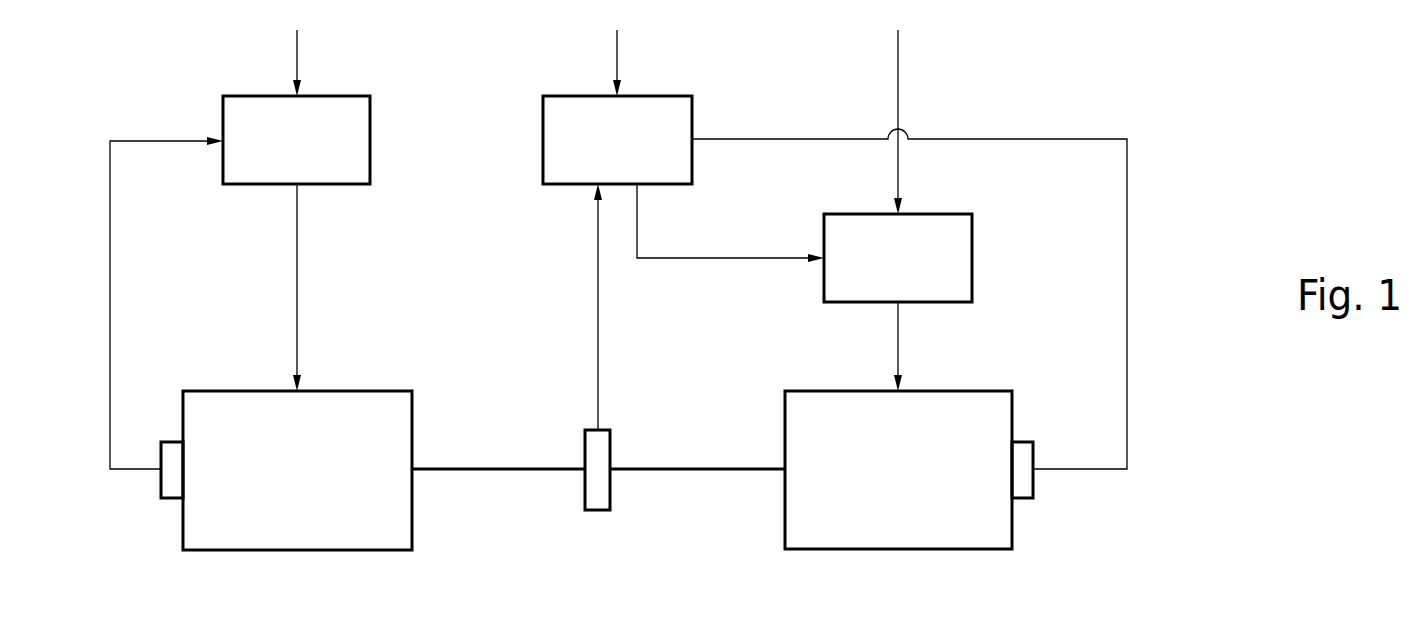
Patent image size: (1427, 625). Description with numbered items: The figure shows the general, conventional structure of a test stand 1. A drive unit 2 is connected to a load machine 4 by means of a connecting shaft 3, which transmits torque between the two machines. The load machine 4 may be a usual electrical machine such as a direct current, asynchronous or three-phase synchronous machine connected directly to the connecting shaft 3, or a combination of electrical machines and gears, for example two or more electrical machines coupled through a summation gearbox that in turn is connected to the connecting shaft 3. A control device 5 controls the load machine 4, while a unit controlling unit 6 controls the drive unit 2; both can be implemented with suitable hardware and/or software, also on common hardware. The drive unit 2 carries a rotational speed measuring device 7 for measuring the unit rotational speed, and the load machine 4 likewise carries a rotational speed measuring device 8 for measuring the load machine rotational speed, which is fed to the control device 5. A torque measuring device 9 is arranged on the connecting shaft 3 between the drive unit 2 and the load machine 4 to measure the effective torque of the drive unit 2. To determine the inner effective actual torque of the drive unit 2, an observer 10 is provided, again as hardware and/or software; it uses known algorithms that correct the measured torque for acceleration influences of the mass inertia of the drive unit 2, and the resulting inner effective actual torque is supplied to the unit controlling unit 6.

The test stand 1 is at (1222, 140).
The drive unit 2 is at (917, 487).
The connecting shaft 3 is at (510, 468).
The load machine 4 is at (311, 483).
The control device 5 is at (283, 152).
The unit controlling unit 6 is at (884, 267).
The rotational speed measuring device 7 is at (1022, 478).
The rotational speed measuring device 8 is at (173, 480).
The torque measuring device 9 is at (600, 492).
The observer 10 is at (635, 150).